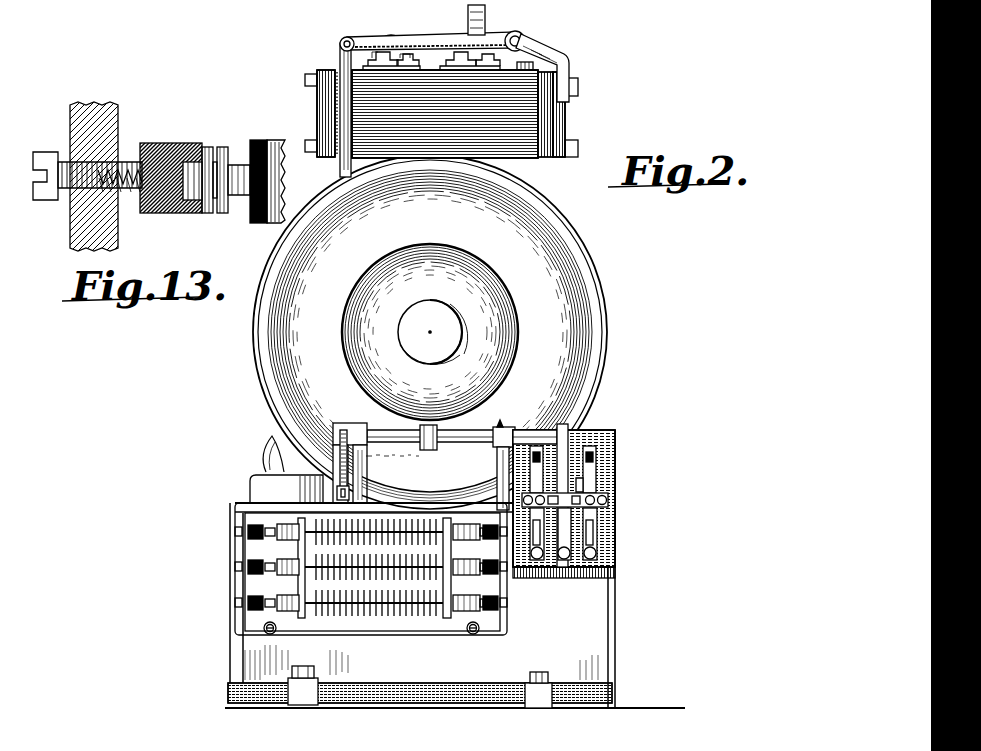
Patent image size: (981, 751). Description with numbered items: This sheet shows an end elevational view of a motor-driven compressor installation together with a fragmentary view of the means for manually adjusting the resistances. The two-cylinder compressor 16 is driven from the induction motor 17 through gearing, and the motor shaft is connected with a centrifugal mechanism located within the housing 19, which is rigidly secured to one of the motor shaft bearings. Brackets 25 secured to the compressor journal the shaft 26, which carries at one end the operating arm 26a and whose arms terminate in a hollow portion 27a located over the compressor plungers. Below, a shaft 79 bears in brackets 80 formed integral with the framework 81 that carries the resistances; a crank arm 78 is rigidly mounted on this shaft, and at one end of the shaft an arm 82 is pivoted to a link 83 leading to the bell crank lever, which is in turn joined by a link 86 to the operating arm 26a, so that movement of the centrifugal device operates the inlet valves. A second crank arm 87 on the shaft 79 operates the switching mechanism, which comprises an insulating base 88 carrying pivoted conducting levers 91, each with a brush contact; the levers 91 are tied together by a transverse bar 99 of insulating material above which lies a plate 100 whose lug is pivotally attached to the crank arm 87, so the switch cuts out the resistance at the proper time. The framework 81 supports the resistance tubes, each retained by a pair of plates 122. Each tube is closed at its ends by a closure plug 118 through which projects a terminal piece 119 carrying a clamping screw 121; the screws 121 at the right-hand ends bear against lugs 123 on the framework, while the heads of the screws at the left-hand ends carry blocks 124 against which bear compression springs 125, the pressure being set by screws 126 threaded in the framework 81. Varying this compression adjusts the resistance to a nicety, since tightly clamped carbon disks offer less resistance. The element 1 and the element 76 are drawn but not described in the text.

In FIG. 13, the switch assembly 1 is at (297, 180).
In FIG. 2, the switch assembly 1 is at (290, 603).
In FIG. 2, the two-cylinder compressor 16 is at (532, 165).
In FIG. 2, the induction motor 17 is at (430, 332).
In FIG. 2, the housing 19 is at (444, 323).
In FIG. 2, the brackets 25 is at (564, 62).
In FIG. 2, the shaft 26 is at (522, 34).
In FIG. 2, the operating arm 26a is at (436, 37).
In FIG. 2, the hollow portion 27a is at (486, 20).
In FIG. 2, the curved strap 76 is at (427, 450).
In FIG. 2, the crank arm 78 is at (432, 436).
In FIG. 2, the shaft 79 is at (372, 430).
In FIG. 2, the brackets 80 is at (424, 465).
In FIG. 13, the framework 81 is at (112, 237).
In FIG. 2, the framework 81 is at (243, 616).
In FIG. 2, the arm 82 is at (340, 466).
In FIG. 2, the link 83 is at (290, 490).
In FIG. 2, the link 86 is at (346, 107).
In FIG. 2, the second crank arm 87 is at (565, 428).
In FIG. 2, the base 88 is at (616, 566).
In FIG. 2, the lever 91 is at (597, 512).
In FIG. 2, the transverse bar 99 is at (604, 497).
In FIG. 2, the plate 100 is at (590, 480).
In FIG. 13, the closure plug 118 is at (261, 223).
In FIG. 13, the terminal piece 119 is at (237, 195).
In FIG. 13, the clamping screws 121 is at (183, 213).
In FIG. 2, the plates 122 is at (315, 618).
In FIG. 2, the lugs 123 is at (505, 607).
In FIG. 13, the blocks 124 is at (185, 146).
In FIG. 2, the blocks 124 is at (240, 605).
In FIG. 13, the compression springs 125 is at (134, 166).
In FIG. 13, the screws 126 is at (46, 200).
In FIG. 2, the screws 126 is at (240, 531).